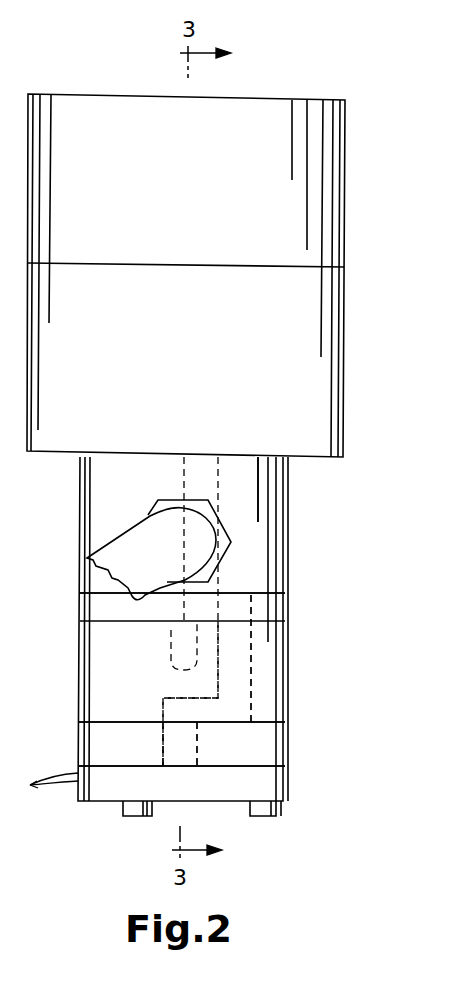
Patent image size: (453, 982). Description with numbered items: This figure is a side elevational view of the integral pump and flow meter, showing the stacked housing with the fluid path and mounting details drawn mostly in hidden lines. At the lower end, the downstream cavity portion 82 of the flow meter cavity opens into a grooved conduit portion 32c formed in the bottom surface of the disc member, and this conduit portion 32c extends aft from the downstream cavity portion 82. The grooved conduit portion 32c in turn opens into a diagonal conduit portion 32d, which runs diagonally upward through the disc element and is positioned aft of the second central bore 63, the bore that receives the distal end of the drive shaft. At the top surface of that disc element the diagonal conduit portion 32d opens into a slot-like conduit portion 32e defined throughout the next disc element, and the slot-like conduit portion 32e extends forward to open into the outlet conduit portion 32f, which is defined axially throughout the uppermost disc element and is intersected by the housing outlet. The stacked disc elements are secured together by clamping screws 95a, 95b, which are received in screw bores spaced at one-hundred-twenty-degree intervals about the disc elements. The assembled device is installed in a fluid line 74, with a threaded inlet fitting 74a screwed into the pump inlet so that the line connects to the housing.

The fluid line 74 is at (118, 535).
The threaded inlet fitting 74a is at (175, 508).
The grooved conduit portion 32c is at (188, 704).
The diagonal conduit portion 32d is at (233, 663).
The slot-like conduit portion 32e is at (229, 606).
The outlet conduit portion 32f is at (208, 477).
The second central bore 63 is at (183, 644).
The downstream cavity portion 82 is at (180, 746).
The clamping screw 95a is at (137, 818).
The clamping screw 95b is at (275, 818).